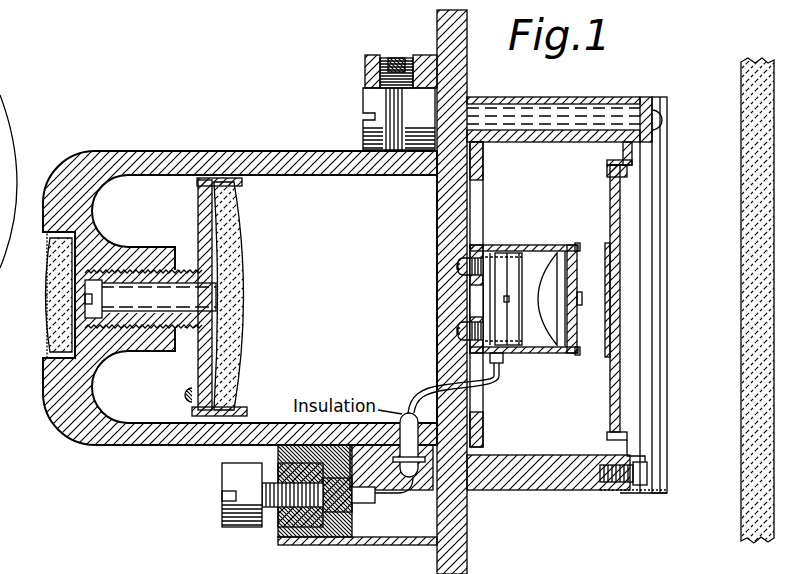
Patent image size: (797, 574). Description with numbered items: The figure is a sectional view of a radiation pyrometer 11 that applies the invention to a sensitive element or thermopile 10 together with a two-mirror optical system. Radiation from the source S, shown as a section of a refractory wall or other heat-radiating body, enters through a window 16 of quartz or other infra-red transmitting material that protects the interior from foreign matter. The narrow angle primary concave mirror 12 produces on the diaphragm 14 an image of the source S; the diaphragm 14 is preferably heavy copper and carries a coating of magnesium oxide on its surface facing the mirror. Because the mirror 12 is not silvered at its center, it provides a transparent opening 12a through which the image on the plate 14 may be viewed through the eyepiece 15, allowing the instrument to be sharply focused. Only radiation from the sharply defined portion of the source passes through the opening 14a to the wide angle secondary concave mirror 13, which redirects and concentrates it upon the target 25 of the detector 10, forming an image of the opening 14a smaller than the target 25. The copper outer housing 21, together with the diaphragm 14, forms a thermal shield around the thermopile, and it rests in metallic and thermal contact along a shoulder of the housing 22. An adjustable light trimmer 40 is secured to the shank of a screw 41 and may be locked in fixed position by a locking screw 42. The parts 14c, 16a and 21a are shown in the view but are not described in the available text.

The thermopile 10 is at (508, 282).
The radiation pyrometer 11 is at (260, 104).
The concave mirror 12 is at (228, 260).
The transparent opening 12a is at (214, 293).
The concave mirror 13 is at (548, 337).
The diaphragm 14 is at (468, 178).
The opening 14a is at (470, 300).
The nut 14c is at (470, 350).
The eyepiece 15 is at (53, 320).
The window 16 is at (622, 253).
The cap strip 16a is at (606, 245).
The outer housing 21 is at (517, 247).
The contact 21a is at (574, 320).
The housing 22 is at (282, 152).
The target 25 is at (510, 300).
The adjustable light trimmer 40 is at (645, 190).
The screw 41 is at (370, 100).
The locking screw 42 is at (387, 60).
The source S is at (740, 445).